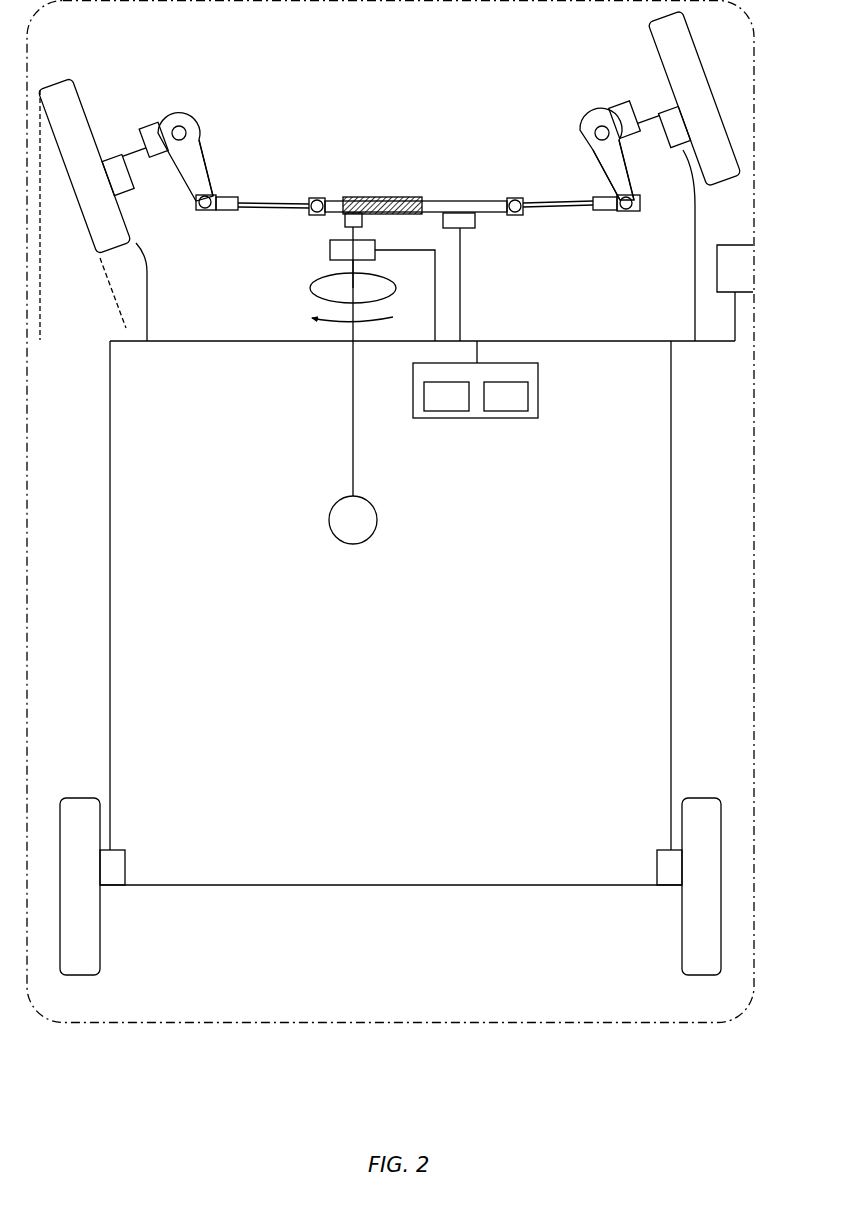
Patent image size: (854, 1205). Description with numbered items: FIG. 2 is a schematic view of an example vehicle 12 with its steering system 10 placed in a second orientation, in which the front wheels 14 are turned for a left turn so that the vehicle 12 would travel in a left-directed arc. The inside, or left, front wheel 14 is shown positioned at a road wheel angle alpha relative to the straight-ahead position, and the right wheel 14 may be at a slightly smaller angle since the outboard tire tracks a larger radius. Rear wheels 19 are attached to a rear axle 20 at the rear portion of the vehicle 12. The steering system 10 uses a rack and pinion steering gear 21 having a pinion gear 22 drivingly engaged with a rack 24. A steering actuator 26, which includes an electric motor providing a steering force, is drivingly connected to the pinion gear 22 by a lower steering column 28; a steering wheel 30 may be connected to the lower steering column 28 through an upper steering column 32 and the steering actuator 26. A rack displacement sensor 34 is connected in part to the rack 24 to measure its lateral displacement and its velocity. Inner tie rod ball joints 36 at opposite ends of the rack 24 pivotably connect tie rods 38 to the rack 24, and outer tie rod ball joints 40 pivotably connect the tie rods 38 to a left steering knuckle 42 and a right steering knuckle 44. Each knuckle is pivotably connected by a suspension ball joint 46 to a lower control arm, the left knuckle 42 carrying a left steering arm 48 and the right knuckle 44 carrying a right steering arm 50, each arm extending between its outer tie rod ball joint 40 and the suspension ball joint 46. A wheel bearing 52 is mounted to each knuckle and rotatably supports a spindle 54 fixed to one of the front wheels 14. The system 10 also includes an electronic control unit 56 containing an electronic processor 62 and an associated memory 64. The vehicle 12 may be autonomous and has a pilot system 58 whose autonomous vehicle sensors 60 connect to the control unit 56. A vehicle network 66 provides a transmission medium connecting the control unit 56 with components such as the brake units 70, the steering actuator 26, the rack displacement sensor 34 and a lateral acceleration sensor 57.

The steering system 10 is at (480, 88).
The vehicle 12 is at (757, 72).
The front wheels 14 is at (80, 82).
The rear wheels 19 is at (80, 798).
The rear axle 20 is at (358, 884).
The rack and pinion steering gear 21 is at (438, 198).
The pinion gear 22 is at (343, 222).
The rack 24 is at (372, 197).
The steering actuator 26 is at (330, 252).
The lower steering column 28 is at (358, 226).
The steering wheel 30 is at (312, 291).
The upper steering column 32 is at (360, 262).
The rack displacement sensor 34 is at (478, 222).
The inner tie rod ball joints 36 is at (316, 199).
The tie rods 38 is at (248, 214).
The outer tie rod ball joints 40 is at (198, 208).
The left steering knuckle 42 is at (190, 195).
The right steering knuckle 44 is at (598, 175).
The suspension ball joint 46 is at (196, 122).
The left steering arm 48 is at (208, 160).
The right steering arm 50 is at (630, 175).
The wheel bearing 52 is at (152, 120).
The spindle 54 is at (121, 152).
The electronic control unit 56 is at (540, 378).
The lateral acceleration sensor 57 is at (741, 245).
The pilot system 58 is at (340, 562).
The autonomous vehicle sensors 60 is at (360, 543).
The electronic processor 62 is at (432, 411).
The memory 64 is at (520, 411).
The vehicle network 66 is at (618, 342).
The brake units 70 is at (123, 170).
The road wheel angle alpha is at (110, 297).